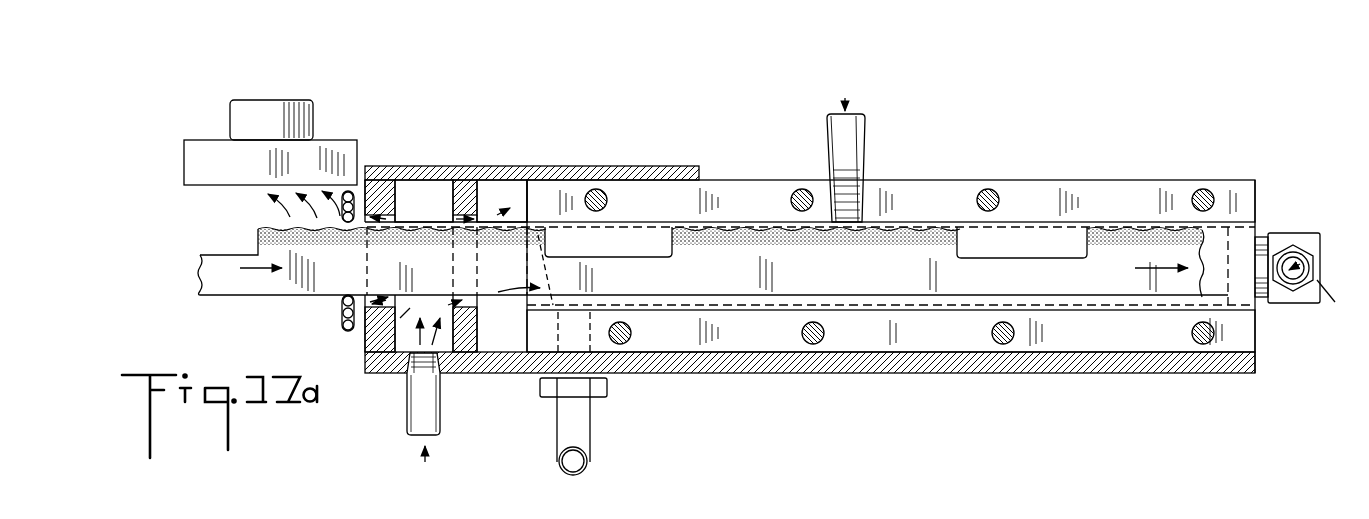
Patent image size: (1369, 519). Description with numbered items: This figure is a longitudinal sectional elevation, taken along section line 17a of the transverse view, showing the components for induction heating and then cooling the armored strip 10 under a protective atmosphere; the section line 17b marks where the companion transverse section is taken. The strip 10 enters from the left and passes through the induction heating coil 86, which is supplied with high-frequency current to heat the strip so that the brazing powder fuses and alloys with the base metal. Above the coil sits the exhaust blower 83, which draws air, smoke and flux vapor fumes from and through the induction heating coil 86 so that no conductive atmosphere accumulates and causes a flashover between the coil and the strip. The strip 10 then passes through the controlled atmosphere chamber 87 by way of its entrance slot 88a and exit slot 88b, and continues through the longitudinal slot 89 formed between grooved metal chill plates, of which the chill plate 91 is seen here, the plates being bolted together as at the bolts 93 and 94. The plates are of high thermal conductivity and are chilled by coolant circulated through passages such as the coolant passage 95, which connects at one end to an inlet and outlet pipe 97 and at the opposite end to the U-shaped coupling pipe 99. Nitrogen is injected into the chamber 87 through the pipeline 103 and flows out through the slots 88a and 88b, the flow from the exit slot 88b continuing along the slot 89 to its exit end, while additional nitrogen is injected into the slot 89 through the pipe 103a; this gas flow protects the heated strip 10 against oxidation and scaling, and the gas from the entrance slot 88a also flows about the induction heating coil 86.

The strip 10 is at (220, 292).
The exhaust blower 83 is at (302, 115).
The induction heating coil 86 is at (341, 323).
The controlled atmosphere chamber 87 is at (433, 183).
The entrance slot 88a is at (392, 222).
The exit slot 88b is at (480, 221).
The longitudinal slot 89 is at (893, 226).
The chill plate 91 is at (1085, 190).
The bolt 93 is at (608, 201).
The bolt 94 is at (631, 334).
The coolant passage 95 is at (1262, 237).
The inlet and outlet pipe 97 is at (1295, 294).
The U-shaped coupling pipe 99 is at (583, 420).
The pipeline 103 is at (428, 416).
The pipe 103a is at (838, 137).
The section line 17a is at (548, 467).
The section line 17b is at (923, 172).